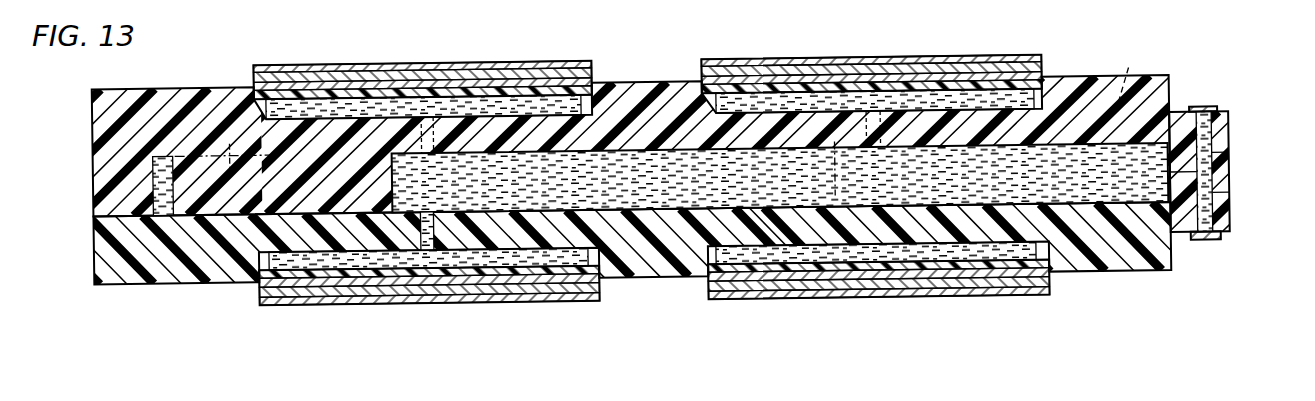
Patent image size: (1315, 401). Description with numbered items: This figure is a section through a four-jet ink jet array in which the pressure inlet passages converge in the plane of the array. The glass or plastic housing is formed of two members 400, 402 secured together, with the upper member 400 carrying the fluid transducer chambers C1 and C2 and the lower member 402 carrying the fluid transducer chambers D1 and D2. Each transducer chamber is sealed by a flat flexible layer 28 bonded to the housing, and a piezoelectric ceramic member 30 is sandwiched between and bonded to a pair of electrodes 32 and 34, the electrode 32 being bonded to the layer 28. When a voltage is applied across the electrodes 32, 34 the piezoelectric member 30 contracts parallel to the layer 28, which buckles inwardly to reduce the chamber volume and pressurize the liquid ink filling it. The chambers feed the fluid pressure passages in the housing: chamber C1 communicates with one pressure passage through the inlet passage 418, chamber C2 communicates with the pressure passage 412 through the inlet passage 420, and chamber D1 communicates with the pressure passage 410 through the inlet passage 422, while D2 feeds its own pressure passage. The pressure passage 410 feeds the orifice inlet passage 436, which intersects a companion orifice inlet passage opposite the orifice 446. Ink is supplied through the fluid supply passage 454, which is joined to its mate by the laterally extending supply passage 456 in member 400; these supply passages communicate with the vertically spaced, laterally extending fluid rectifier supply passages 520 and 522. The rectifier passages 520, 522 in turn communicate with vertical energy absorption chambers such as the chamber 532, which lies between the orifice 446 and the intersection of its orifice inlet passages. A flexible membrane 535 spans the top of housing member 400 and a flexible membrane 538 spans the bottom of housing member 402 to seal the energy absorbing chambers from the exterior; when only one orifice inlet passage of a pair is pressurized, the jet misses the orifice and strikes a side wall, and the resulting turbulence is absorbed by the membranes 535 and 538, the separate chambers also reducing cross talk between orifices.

The flat flexible layer 28 is at (296, 89).
The piezoelectric ceramic member 30 is at (410, 71).
The electrode 32 is at (357, 80).
The electrode 34 is at (472, 62).
The housing member 400 is at (1163, 83).
The housing member 402 is at (1170, 278).
The fluid pressure passage 410 is at (640, 170).
The fluid pressure passage 412 is at (1130, 74).
The inlet passage 418 is at (420, 127).
The inlet passage 420 is at (865, 128).
The inlet passage 422 is at (420, 228).
The orifice inlet passage 436 is at (1170, 160).
The orifice 446 is at (1231, 194).
The fluid supply passage 454 is at (230, 147).
The laterally extending supply passage 456 is at (163, 150).
The fluid rectifier supply passage 520 is at (1231, 131).
The fluid rectifier supply passage 522 is at (1231, 224).
The energy absorption chamber 532 is at (1231, 169).
The flexible membrane 535 is at (1205, 114).
The flexible membrane 538 is at (1216, 247).
The fluid transducer chamber C1 is at (531, 104).
The fluid transducer chamber C2 is at (987, 109).
The fluid transducer chamber D1 is at (555, 256).
The fluid transducer chamber D2 is at (1003, 265).